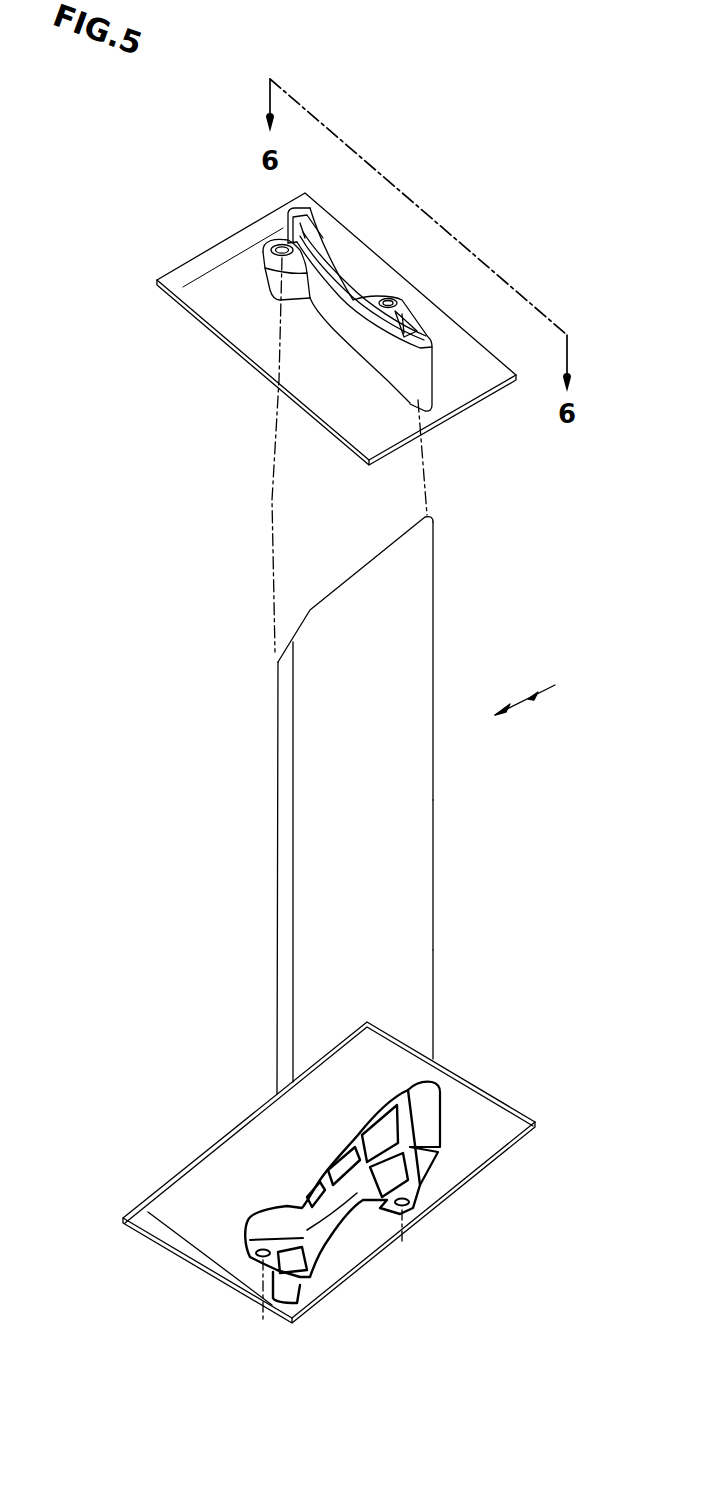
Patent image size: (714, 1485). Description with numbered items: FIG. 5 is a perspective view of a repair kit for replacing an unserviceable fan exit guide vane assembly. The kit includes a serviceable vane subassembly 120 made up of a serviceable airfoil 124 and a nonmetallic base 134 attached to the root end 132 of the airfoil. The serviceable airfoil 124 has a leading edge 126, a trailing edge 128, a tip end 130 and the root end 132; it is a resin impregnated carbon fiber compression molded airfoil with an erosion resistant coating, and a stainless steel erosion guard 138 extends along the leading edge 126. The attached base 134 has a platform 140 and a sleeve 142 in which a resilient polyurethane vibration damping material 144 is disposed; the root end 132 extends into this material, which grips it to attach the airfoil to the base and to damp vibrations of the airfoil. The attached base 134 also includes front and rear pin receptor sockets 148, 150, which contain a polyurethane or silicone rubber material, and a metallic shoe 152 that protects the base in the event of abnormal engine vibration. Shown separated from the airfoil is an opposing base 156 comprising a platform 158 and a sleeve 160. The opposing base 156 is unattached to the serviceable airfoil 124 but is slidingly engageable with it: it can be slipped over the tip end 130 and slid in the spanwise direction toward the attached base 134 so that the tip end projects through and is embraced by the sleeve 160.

The serviceable vane subassembly 120 is at (543, 685).
The serviceable airfoil 124 is at (425, 803).
The leading edge 126 is at (277, 873).
The trailing edge 128 is at (435, 877).
The tip end 130 is at (420, 538).
The root end 132 is at (422, 1035).
The nonmetallic base 134 is at (473, 1173).
The stainless steel erosion guard 138 is at (282, 743).
The platform 140 is at (232, 1157).
The sleeve 142 is at (430, 1118).
The resilient polyurethane vibration damping material 144 is at (330, 1235).
The front pin receptor socket 148 is at (257, 1265).
The rear pin receptor socket 150 is at (403, 1205).
The metallic shoe 152 is at (358, 1137).
The opposing base 156 is at (461, 408).
The platform 158 is at (345, 417).
The sleeve 160 is at (406, 365).